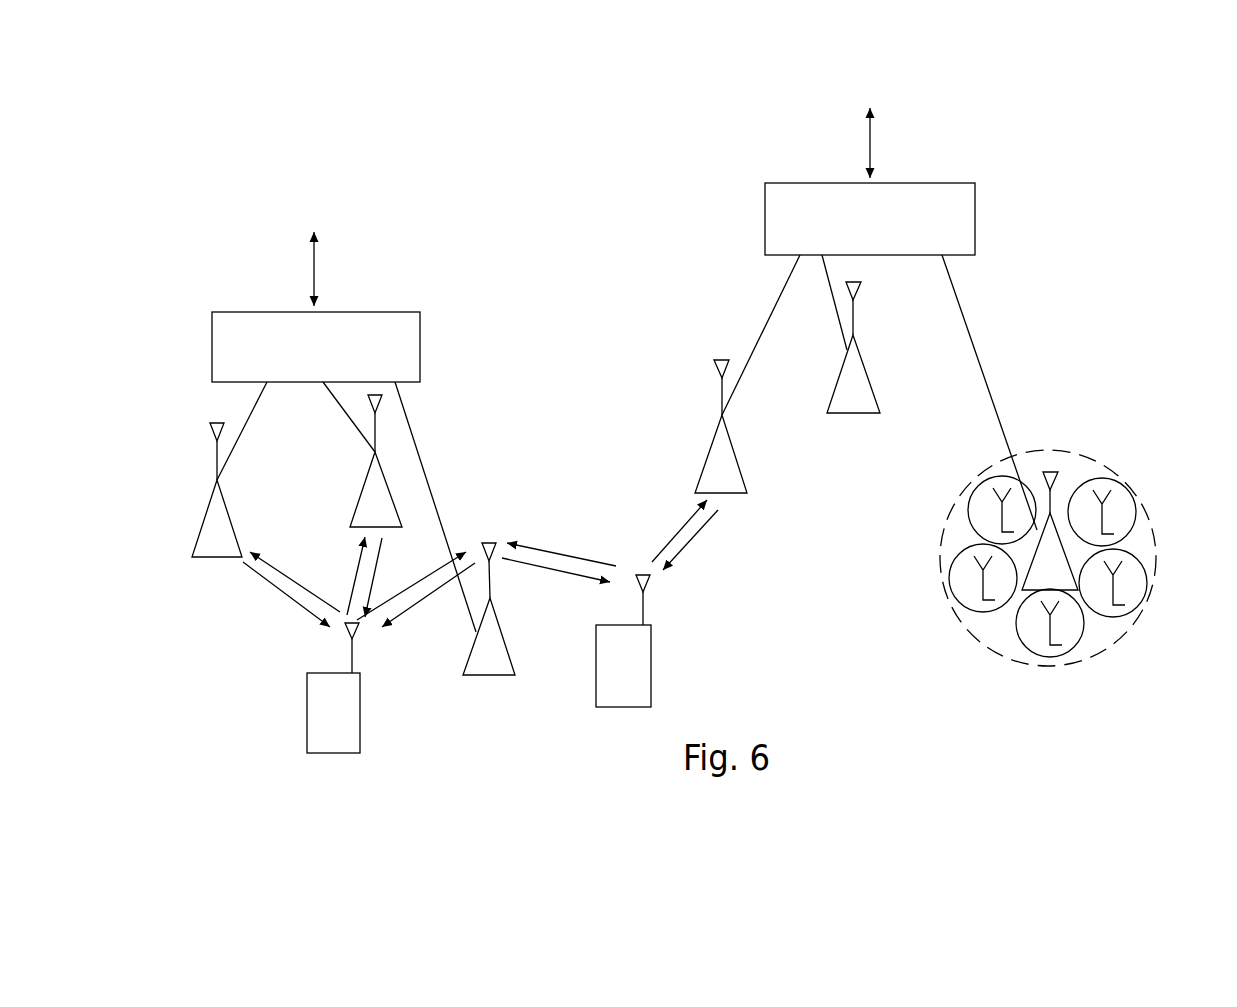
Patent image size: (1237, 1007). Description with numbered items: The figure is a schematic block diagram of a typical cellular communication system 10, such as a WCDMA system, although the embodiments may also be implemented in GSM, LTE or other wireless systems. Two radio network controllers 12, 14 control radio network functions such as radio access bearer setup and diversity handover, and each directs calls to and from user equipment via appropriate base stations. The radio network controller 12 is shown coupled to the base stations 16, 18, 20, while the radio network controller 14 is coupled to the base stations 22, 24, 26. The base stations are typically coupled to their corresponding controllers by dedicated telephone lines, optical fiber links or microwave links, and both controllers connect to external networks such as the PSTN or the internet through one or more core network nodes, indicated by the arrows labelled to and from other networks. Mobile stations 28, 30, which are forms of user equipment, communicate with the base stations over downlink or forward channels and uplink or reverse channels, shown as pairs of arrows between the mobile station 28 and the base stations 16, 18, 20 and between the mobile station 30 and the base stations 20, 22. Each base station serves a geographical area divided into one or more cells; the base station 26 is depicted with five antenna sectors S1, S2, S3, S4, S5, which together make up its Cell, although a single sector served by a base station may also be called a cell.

The cellular communication system 10 is at (190, 262).
The radio network controller 12 is at (410, 368).
The radio network controller 14 is at (966, 242).
The base station 16 is at (212, 498).
The base station 18 is at (363, 490).
The base station 20 is at (497, 618).
The base station 22 is at (735, 455).
The base station 24 is at (861, 357).
The base station 26 is at (1056, 475).
The mobile station 28 is at (307, 698).
The mobile station 30 is at (596, 652).
The antenna sector S1 is at (1119, 483).
The antenna sector S2 is at (1137, 608).
The antenna sector S3 is at (1079, 640).
The antenna sector S4 is at (950, 580).
The antenna sector S5 is at (968, 507).
The cell Cell is at (1147, 516).